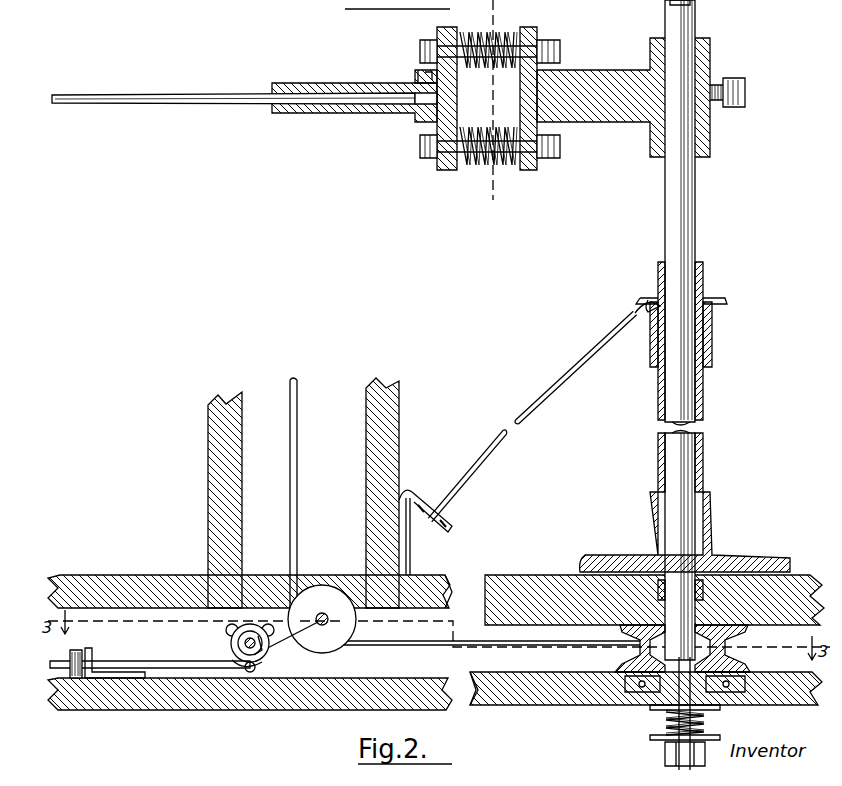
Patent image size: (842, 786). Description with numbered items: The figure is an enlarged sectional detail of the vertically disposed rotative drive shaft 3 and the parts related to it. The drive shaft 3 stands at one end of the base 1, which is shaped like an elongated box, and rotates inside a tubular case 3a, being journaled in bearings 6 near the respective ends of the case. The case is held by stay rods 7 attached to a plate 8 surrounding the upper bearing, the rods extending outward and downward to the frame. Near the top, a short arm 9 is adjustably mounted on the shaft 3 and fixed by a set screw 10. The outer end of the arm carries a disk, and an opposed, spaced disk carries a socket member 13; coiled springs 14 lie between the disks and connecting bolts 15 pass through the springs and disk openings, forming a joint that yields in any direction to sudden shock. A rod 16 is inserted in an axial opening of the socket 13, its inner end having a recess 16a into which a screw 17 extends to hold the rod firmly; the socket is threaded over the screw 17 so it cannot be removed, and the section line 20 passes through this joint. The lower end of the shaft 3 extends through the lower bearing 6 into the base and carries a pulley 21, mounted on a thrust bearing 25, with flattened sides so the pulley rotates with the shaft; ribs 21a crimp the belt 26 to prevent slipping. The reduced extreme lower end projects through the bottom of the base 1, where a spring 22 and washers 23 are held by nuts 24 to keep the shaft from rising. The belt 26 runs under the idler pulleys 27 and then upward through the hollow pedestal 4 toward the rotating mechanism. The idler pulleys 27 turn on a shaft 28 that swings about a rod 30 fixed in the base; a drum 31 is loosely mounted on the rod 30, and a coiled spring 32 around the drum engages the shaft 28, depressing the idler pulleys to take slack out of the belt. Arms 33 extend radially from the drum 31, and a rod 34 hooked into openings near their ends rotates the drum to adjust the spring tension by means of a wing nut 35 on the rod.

The base 1 is at (404, 708).
The drive shaft 3 is at (696, 215).
The tubular case 3a is at (703, 395).
The hollow pedestal 4 is at (399, 432).
The bearing 6 is at (712, 328).
The stay rod 7 is at (538, 412).
The plate 8 is at (712, 298).
The arm 9 is at (600, 68).
The set screw 10 is at (745, 90).
The socket member 13 is at (365, 113).
The coiled spring 14 is at (468, 38).
The connecting bolt 15 is at (420, 38).
The rod 16 is at (208, 93).
The recess 16a is at (420, 113).
The screw 17 is at (416, 72).
The section line 20— 20 is at (496, 108).
The pulley 21 is at (634, 600).
The rib 21a is at (740, 640).
The spring 22 is at (704, 722).
The washer 23 is at (655, 712).
The nut 24 is at (665, 756).
The thrust bearing 25 is at (745, 684).
The belt 26 is at (297, 463).
The idler pulley 27 is at (326, 588).
The shaft 28 is at (295, 648).
The rod 30 is at (240, 648).
The drum 31 is at (250, 650).
The coiled spring 32 is at (256, 670).
The arm 33 is at (262, 624).
The rod 34 is at (148, 650).
The wing nut 35 is at (80, 648).